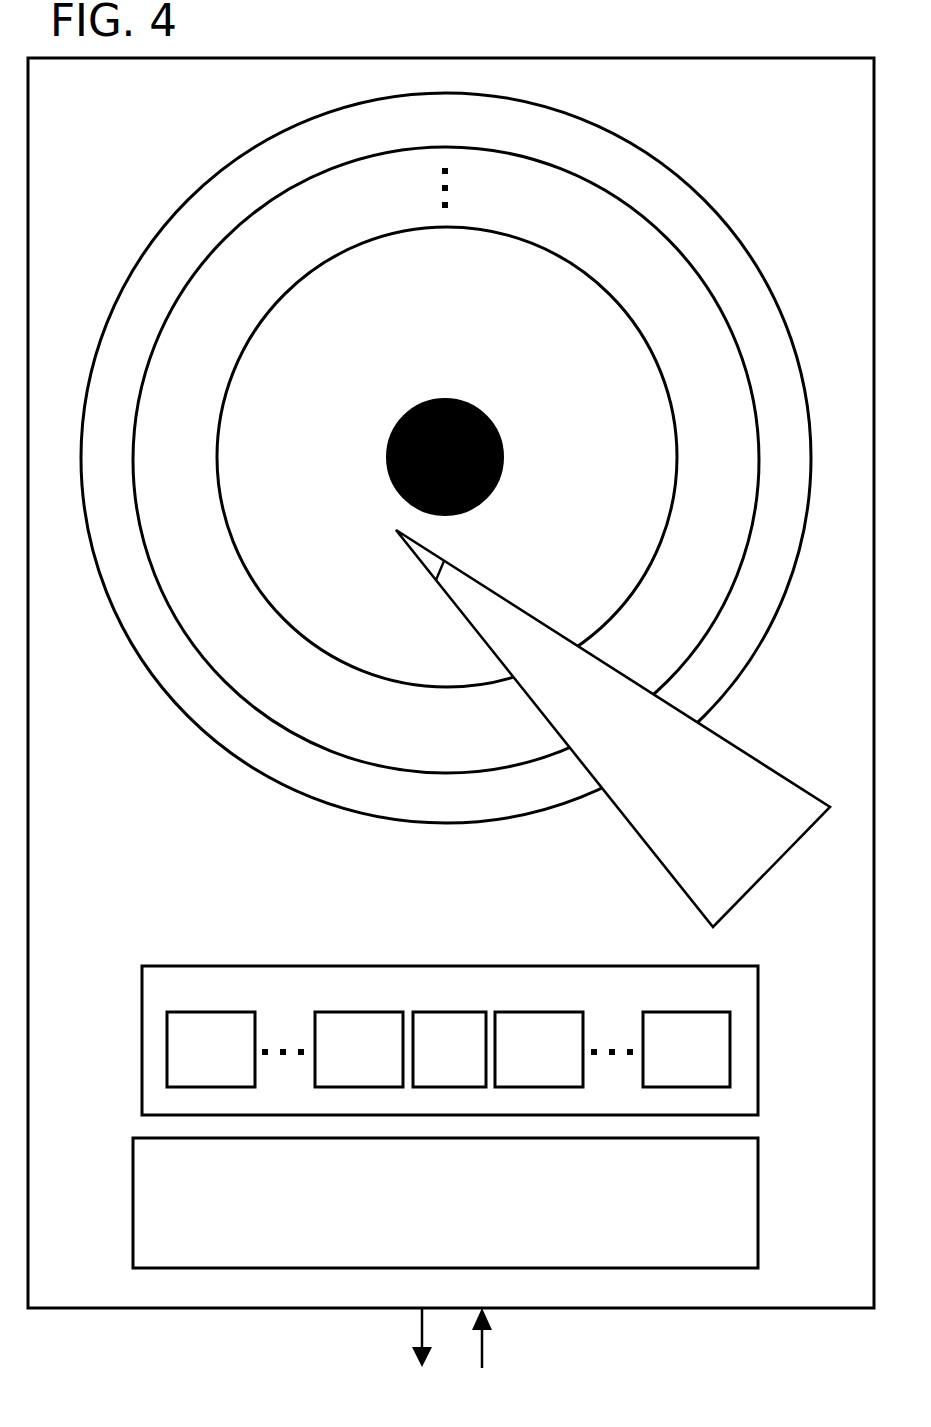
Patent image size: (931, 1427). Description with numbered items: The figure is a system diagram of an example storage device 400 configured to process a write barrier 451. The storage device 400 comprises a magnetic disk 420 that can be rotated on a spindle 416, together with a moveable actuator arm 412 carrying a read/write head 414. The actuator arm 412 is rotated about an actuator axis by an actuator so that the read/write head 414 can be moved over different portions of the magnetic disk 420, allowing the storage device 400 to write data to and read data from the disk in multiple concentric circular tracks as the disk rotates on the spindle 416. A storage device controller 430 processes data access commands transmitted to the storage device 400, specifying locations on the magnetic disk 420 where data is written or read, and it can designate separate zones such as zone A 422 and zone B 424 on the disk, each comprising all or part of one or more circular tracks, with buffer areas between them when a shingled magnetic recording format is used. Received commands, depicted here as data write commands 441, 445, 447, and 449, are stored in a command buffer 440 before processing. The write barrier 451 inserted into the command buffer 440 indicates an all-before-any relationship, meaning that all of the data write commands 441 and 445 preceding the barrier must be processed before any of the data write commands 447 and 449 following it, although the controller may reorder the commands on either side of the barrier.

The storage device 400 is at (303, 96).
The actuator arm 412 is at (757, 758).
The read/write head 414 is at (412, 549).
The spindle 416 is at (503, 460).
The magnetic disk 420 is at (723, 220).
The zone A 422 is at (515, 136).
The zone B 424 is at (513, 302).
The storage device controller 430 is at (667, 1217).
The command buffer 440 is at (595, 1002).
The data write command 441 is at (230, 1074).
The data write command 445 is at (379, 1074).
The data write command 447 is at (559, 1074).
The data write command 449 is at (706, 1074).
The write barrier 451 is at (470, 1074).